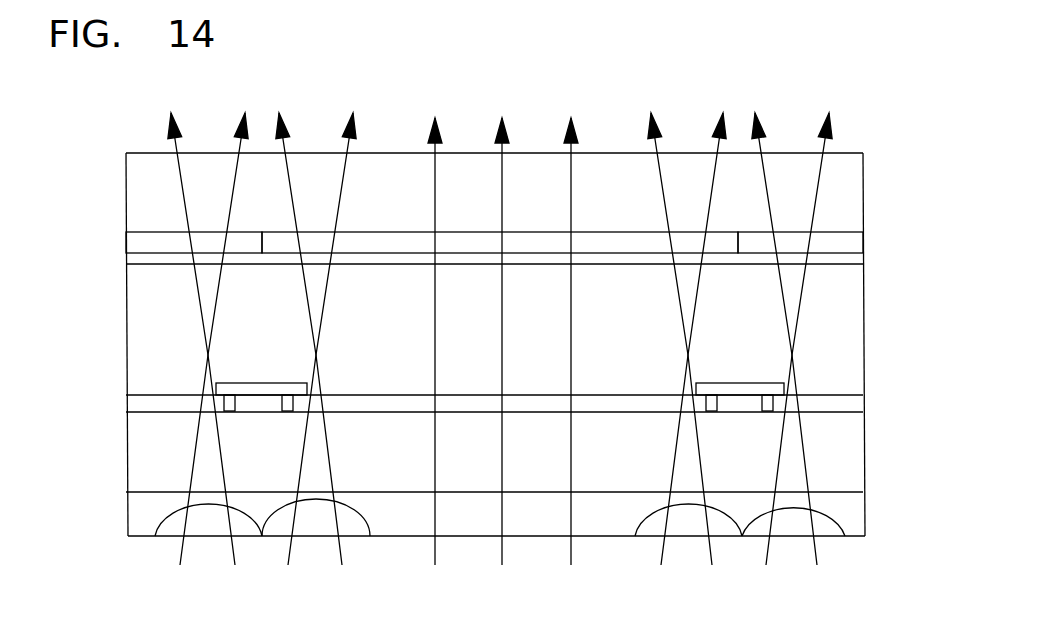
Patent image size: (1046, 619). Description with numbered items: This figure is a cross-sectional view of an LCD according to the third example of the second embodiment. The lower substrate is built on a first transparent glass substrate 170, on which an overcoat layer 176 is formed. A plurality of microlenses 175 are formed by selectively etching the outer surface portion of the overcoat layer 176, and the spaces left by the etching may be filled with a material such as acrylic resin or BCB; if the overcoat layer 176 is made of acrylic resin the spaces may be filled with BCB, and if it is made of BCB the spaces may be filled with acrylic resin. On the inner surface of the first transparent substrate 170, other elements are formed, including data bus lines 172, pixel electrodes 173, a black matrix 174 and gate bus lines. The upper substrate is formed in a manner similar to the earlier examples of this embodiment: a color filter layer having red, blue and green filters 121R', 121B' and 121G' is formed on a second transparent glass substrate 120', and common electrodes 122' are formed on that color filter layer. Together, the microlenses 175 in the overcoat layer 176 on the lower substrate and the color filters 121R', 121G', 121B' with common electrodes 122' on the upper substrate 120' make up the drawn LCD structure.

The second transparent glass substrate 120' is at (482, 131).
The red filter 121R' is at (153, 222).
The green filter 121G' is at (500, 166).
The blue filter 121B' is at (844, 203).
The common electrodes 122' is at (532, 295).
The first transparent glass substrate 170 is at (148, 472).
The data bus lines 172 is at (255, 407).
The pixel electrodes 173 is at (377, 408).
The black matrix 174 is at (738, 408).
The microlenses 175 is at (652, 530).
The overcoat layer 176 is at (148, 518).